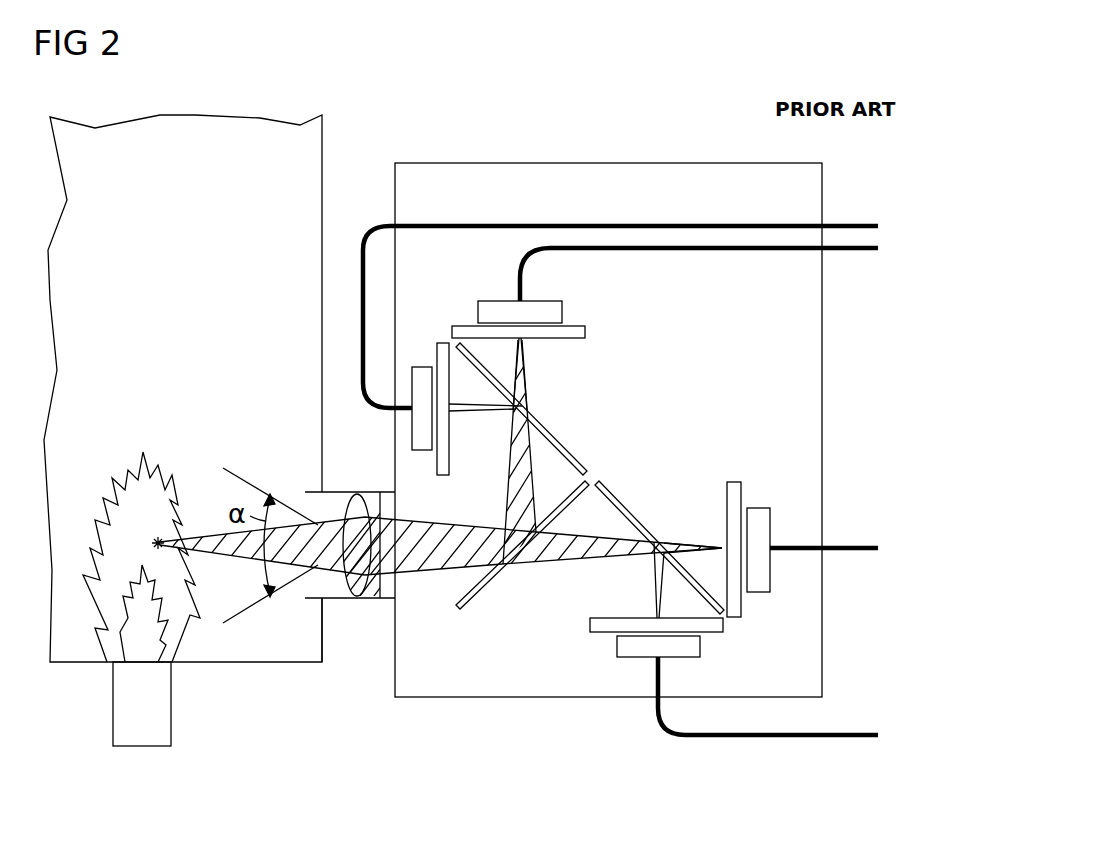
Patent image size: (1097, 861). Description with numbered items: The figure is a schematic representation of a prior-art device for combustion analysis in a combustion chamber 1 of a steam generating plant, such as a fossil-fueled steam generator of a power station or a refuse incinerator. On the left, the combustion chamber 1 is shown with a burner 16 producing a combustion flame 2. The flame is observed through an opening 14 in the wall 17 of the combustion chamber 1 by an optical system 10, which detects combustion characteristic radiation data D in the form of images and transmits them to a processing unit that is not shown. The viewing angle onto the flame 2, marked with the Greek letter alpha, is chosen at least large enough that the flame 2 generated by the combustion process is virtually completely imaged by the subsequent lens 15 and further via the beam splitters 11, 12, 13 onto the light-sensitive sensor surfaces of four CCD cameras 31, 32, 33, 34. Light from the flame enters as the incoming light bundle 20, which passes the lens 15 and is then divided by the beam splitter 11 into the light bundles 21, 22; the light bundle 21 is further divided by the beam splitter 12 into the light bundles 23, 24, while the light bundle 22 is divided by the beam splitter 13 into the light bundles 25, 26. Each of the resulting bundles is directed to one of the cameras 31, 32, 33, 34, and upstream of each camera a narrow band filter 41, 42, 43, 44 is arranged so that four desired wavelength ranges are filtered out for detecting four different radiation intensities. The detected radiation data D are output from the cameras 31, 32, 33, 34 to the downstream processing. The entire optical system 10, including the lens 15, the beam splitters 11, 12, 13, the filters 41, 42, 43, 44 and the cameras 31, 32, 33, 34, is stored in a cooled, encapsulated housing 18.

The combustion chamber 1 is at (180, 115).
The combustion flame 2 is at (117, 492).
The optical system 10 is at (583, 97).
The beam splitter 11 is at (497, 580).
The beam splitter 12 is at (570, 446).
The beam splitter 13 is at (605, 490).
The opening 14 is at (305, 502).
The lens 15 is at (352, 600).
The burner 16 is at (171, 702).
The wall of the combustion chamber 17 is at (300, 665).
The cooled encapsulated housing 18 is at (684, 163).
The incoming light bundle 20 is at (430, 572).
The light bundle 21 is at (506, 498).
The light bundle 22 is at (565, 555).
The light bundle 23 is at (490, 410).
The light bundle 24 is at (527, 388).
The light bundle 25 is at (656, 585).
The light bundle 26 is at (690, 545).
The CCD-camera 31 is at (422, 367).
The CCD-camera 32 is at (478, 312).
The CCD-camera 33 is at (617, 646).
The CCD-camera 34 is at (757, 595).
The narrow band filter 41 is at (437, 462).
The narrow band filter 42 is at (585, 331).
The narrow band filter 43 is at (590, 628).
The narrow band filter 44 is at (733, 485).
The combustion characteristic radiation data D is at (855, 248).